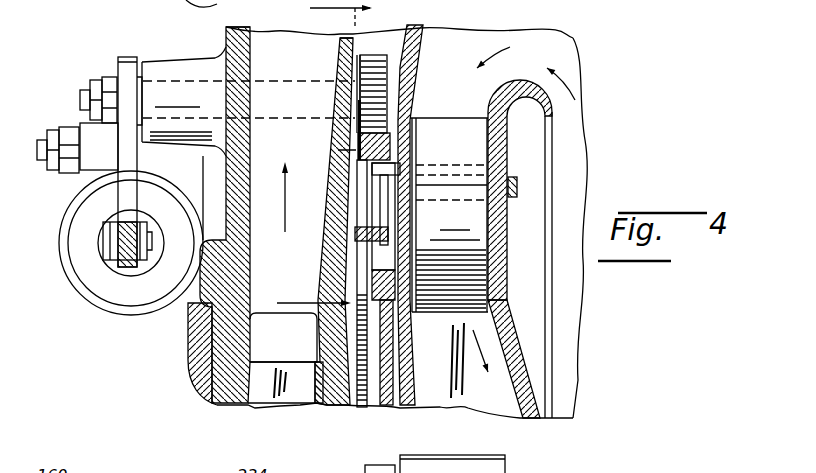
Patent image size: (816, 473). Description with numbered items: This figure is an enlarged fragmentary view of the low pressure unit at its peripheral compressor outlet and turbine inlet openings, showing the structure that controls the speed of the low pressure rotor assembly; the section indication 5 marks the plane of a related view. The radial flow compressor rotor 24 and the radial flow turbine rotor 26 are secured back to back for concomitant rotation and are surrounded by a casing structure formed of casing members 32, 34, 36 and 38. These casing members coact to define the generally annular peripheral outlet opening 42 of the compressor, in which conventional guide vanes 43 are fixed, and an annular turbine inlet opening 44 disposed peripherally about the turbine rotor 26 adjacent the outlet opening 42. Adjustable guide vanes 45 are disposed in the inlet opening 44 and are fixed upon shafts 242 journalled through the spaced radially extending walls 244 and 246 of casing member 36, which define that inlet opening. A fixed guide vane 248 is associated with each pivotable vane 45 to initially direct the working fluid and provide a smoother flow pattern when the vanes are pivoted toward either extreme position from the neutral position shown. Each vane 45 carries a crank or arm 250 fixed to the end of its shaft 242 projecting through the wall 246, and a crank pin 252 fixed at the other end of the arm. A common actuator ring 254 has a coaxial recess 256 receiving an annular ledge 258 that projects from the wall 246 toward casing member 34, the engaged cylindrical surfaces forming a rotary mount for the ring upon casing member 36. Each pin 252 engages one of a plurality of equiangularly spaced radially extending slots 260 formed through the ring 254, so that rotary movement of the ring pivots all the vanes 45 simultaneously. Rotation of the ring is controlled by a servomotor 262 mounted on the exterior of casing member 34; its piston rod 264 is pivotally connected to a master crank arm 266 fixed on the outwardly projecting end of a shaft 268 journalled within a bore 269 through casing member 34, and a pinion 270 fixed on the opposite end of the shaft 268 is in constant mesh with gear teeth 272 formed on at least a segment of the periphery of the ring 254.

The section line 5- 5 is at (324, 156).
The radial flow compressor rotor 24 is at (293, 397).
The radial flow turbine rotor 26 is at (477, 405).
The casing member 32 is at (210, 380).
The casing member 34 is at (227, 32).
The casing member 36 is at (543, 287).
The casing member 38 is at (390, 405).
The peripheral outlet opening 42 is at (250, 334).
The guide vanes 43 is at (270, 30).
The turbine inlet opening 44 is at (483, 238).
The adjustable guide vanes 45 is at (480, 217).
The shafts 242 is at (515, 185).
The radially extending wall 244 is at (515, 140).
The radially extending wall 246 is at (410, 133).
The fixed guide vane 248 is at (463, 123).
The crank or arm 250 is at (413, 217).
The crank pin 252 is at (355, 233).
The ring 254 is at (357, 195).
The recess 256 is at (340, 152).
The annular ledge 258 is at (343, 172).
The radially extending slots 260 is at (360, 263).
The servomotor 262 is at (58, 237).
The piston rod 264 is at (110, 257).
The master crank arm 266 is at (132, 160).
The shaft 268 is at (293, 70).
The bore 269 is at (306, 125).
The pinion 270 is at (373, 55).
The gear teeth 272 is at (413, 118).